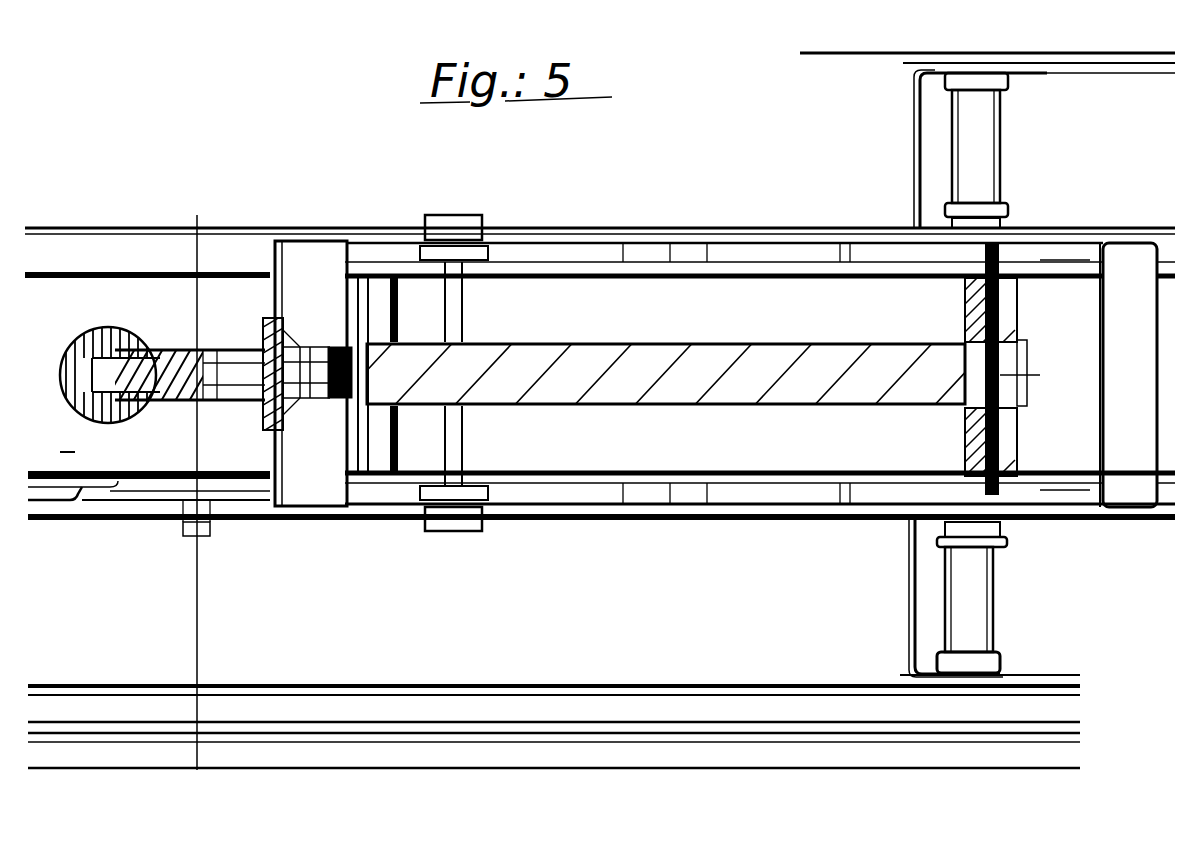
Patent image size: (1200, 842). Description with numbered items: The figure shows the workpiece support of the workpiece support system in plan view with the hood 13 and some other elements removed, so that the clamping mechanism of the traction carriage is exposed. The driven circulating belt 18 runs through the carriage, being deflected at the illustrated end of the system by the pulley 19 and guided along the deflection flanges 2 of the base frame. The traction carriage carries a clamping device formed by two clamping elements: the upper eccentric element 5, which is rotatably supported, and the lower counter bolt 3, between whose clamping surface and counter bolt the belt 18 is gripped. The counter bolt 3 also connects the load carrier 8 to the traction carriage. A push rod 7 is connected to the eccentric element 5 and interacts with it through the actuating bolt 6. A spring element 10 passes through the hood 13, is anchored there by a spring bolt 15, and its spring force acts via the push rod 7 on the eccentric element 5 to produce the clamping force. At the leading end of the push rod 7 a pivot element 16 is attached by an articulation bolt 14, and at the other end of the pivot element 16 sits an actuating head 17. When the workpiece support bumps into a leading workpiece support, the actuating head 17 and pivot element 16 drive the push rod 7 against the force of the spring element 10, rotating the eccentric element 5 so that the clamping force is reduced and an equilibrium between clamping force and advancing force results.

The deflection flange 2 is at (1007, 757).
The counter bolt 3 is at (963, 643).
The eccentric element 5 is at (1015, 485).
The actuating bolt 6 is at (1020, 455).
The push rod 7 is at (1030, 277).
The load carrier 8 is at (1085, 73).
The spring element 10 is at (713, 342).
The hood 13 is at (402, 228).
The articulation bolt 14 is at (336, 345).
The spring bolt 15 is at (270, 318).
The pivot element 16 is at (168, 350).
The actuating head 17 is at (80, 330).
The belt 18 is at (67, 452).
The pulley 19 is at (82, 487).